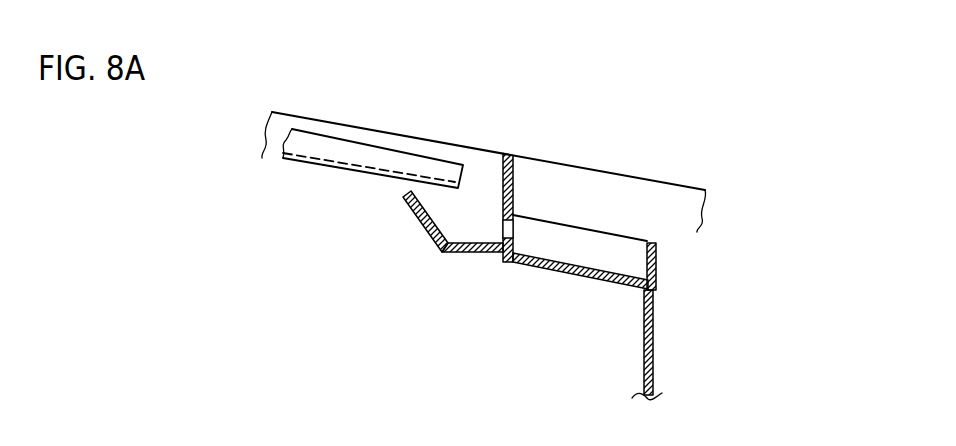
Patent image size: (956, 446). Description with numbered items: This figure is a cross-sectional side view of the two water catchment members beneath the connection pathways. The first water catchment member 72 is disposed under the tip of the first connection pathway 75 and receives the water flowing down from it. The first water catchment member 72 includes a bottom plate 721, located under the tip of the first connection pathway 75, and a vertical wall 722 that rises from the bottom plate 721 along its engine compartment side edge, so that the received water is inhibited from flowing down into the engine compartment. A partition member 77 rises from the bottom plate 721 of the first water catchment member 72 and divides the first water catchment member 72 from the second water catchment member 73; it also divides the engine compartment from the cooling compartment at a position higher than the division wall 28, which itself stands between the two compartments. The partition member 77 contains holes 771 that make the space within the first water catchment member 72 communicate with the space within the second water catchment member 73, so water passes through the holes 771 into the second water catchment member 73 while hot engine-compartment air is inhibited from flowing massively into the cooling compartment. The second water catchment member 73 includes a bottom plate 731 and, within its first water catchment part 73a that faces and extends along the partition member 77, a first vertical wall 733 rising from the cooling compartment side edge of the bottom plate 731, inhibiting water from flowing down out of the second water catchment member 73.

The division wall 28 is at (653, 350).
The first water catchment member 72 is at (410, 278).
The bottom plate 721 is at (477, 253).
The vertical wall 722 is at (422, 223).
The second water catchment member 73 is at (655, 241).
The first water catchment part 73a is at (602, 245).
The bottom plate 731 is at (568, 268).
The first vertical wall 733 is at (657, 265).
The first connection pathway 75 is at (413, 165).
The partition member 77 is at (527, 150).
The holes 771 is at (515, 228).